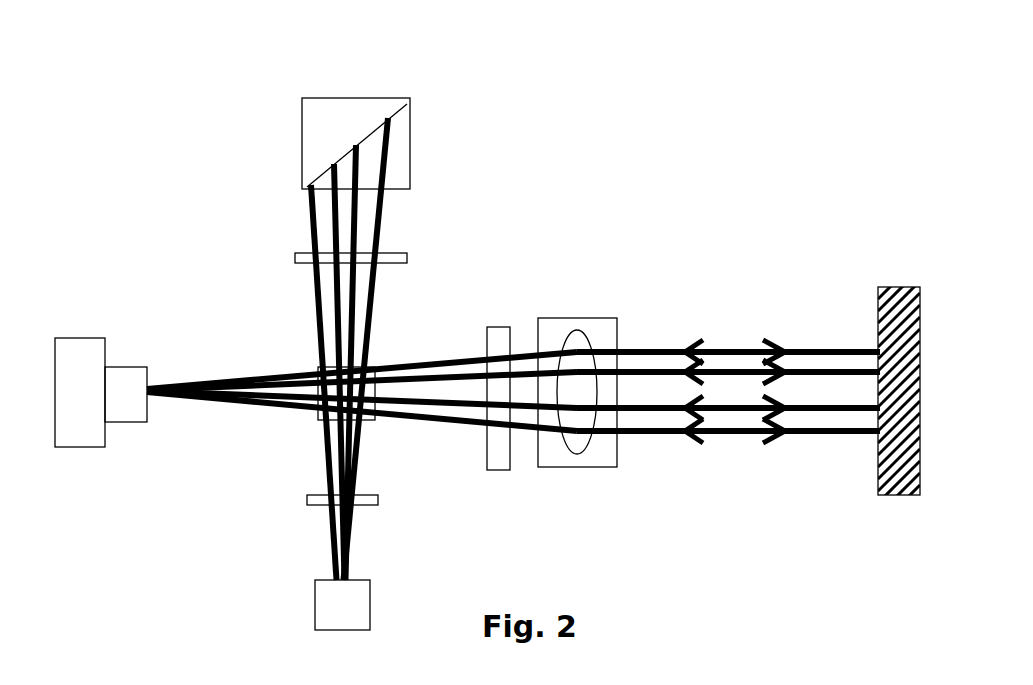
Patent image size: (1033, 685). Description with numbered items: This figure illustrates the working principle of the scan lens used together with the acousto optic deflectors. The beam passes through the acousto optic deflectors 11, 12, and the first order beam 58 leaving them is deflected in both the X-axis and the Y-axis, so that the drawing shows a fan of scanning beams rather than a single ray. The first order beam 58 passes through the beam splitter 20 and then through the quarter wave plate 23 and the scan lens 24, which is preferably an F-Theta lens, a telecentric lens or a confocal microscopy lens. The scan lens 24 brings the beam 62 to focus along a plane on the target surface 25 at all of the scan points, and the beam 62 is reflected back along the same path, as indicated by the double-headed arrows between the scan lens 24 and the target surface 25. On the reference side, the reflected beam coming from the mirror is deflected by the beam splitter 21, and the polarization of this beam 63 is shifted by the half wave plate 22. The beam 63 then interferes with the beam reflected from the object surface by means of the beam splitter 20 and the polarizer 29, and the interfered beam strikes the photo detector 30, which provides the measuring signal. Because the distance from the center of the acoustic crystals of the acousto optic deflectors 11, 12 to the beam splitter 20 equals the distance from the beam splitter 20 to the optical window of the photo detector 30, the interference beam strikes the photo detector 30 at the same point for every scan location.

The acousto optic deflector 11 is at (67, 338).
The acousto optic deflector 12 is at (112, 367).
The beam splitter 20 is at (320, 368).
The beam splitter 21 is at (325, 100).
The half wave plate 22 is at (292, 258).
The quarter wave plate 23 is at (502, 325).
The scan lens 24 is at (585, 318).
The target surface 25 is at (887, 287).
The polarizer 29 is at (307, 498).
The photo detector 30 is at (315, 600).
The first order beam 58 is at (440, 427).
The beam 62 is at (730, 435).
The beam 63 is at (383, 218).